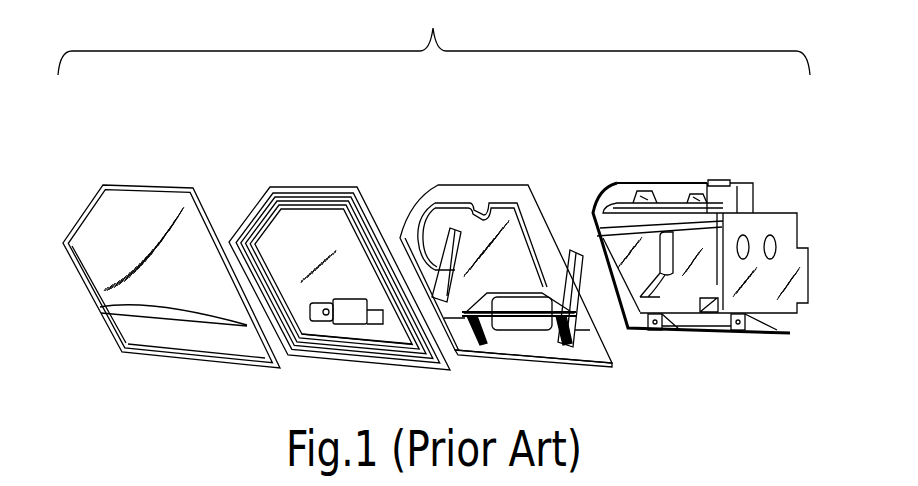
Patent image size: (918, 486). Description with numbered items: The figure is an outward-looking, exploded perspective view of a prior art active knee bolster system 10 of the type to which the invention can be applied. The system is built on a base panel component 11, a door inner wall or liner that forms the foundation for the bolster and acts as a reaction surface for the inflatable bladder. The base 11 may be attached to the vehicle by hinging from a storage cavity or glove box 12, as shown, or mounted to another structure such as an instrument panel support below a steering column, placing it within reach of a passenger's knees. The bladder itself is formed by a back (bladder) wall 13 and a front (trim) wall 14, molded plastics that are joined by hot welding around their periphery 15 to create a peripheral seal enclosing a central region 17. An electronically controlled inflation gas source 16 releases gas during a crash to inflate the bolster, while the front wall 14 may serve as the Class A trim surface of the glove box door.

The active knee bolster system 10 is at (434, 38).
The base panel component 11 is at (463, 184).
The glove box 12 is at (650, 184).
The back (bladder) wall 13 is at (339, 258).
The front (trim) wall 14 is at (150, 184).
The periphery 15 is at (339, 189).
The inflation gas source 16 is at (348, 318).
The central region 17 is at (332, 238).